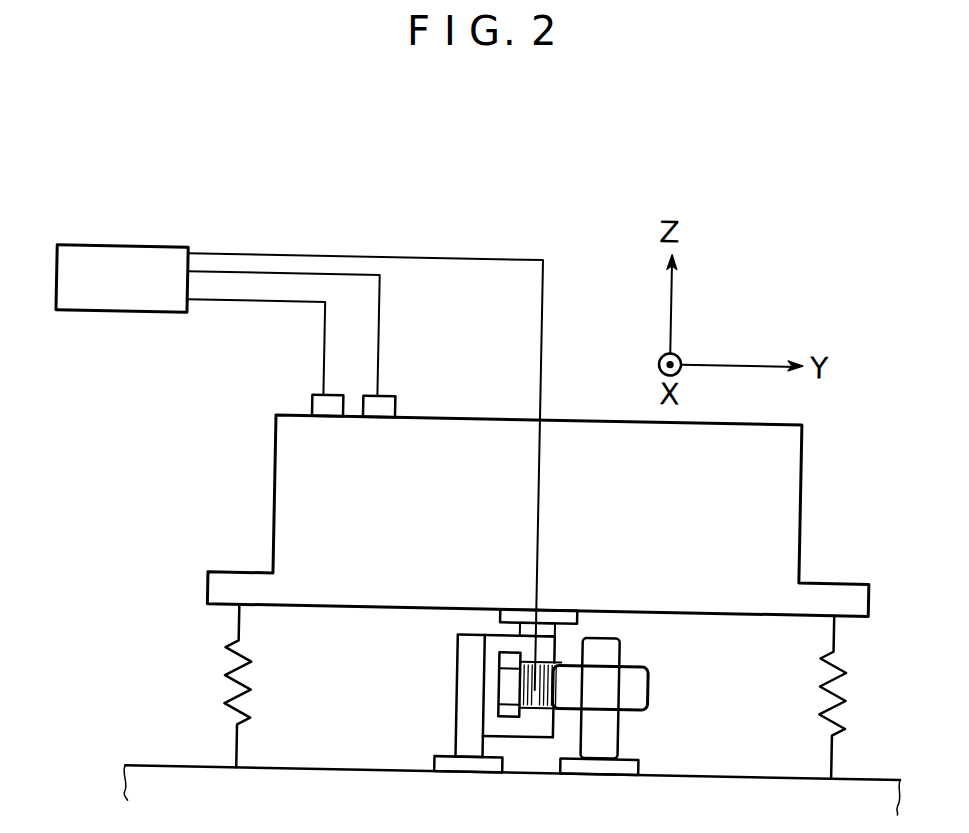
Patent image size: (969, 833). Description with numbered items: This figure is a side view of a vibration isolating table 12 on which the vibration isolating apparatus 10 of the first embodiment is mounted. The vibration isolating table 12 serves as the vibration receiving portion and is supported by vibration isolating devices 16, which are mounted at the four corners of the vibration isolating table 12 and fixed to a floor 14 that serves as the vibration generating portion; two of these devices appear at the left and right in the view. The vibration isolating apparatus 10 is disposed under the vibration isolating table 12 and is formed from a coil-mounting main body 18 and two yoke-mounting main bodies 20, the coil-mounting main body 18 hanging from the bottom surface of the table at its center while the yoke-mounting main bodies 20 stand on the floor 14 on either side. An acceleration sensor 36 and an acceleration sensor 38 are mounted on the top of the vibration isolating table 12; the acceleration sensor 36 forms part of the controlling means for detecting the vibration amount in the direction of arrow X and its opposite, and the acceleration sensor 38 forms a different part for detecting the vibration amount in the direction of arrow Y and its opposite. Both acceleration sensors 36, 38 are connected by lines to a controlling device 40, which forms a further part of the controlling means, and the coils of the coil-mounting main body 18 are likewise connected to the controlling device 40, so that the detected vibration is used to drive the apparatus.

The vibration isolating apparatus 10 is at (659, 681).
The vibration isolating table 12 is at (806, 461).
The floor 14 is at (847, 769).
The vibration isolating devices 16 is at (243, 641).
The coil-mounting main body 18 is at (584, 614).
The yoke-mounting main bodies 20 is at (463, 728).
The acceleration sensor 36 is at (325, 408).
The acceleration sensor 38 is at (378, 408).
The controlling device 40 is at (125, 250).